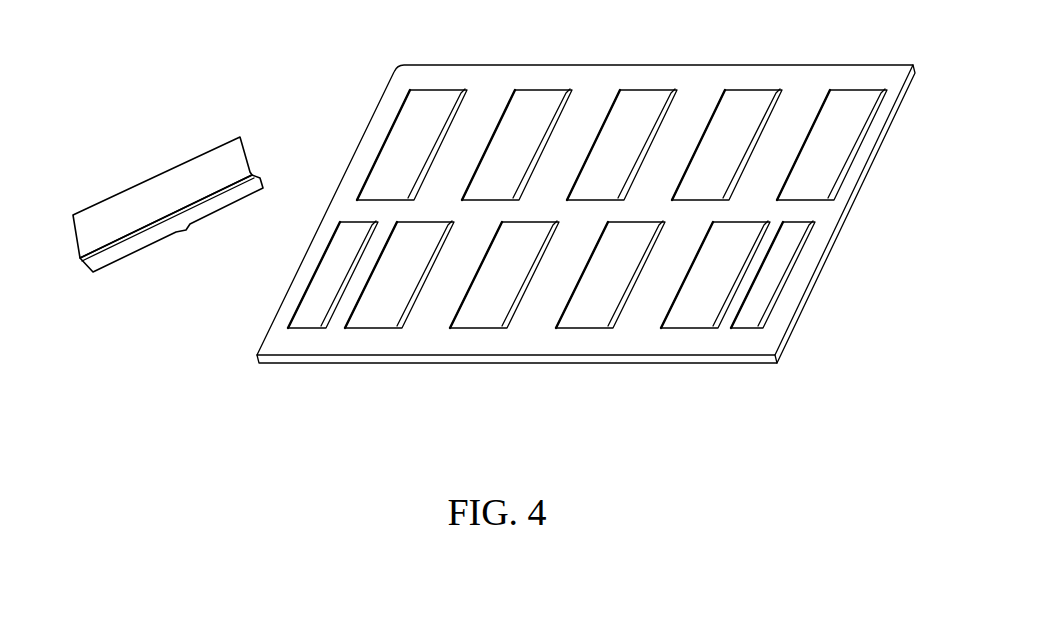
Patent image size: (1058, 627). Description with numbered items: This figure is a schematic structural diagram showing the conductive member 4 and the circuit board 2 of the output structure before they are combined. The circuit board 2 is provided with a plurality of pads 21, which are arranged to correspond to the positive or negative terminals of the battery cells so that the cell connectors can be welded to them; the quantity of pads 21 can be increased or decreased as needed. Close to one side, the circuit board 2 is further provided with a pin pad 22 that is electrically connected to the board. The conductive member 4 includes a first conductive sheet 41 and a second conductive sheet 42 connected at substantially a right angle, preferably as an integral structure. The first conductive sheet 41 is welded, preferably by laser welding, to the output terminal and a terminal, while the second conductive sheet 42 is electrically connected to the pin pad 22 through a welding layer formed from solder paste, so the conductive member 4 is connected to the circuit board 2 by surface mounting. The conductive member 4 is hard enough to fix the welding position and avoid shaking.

The circuit board 2 is at (428, 337).
The pads 21 is at (427, 98).
The pin pad 22 is at (317, 312).
The conductive member 4 is at (215, 110).
The first conductive sheet 41 is at (130, 208).
The second conductive sheet 42 is at (203, 210).